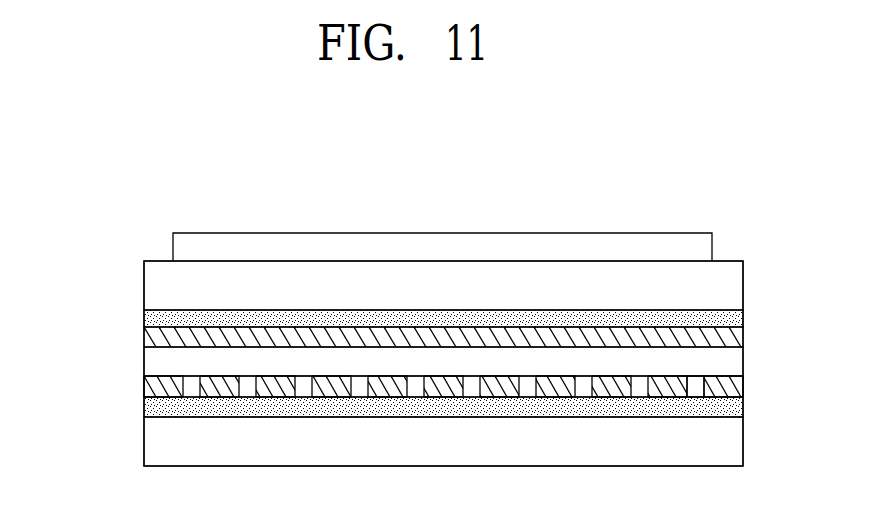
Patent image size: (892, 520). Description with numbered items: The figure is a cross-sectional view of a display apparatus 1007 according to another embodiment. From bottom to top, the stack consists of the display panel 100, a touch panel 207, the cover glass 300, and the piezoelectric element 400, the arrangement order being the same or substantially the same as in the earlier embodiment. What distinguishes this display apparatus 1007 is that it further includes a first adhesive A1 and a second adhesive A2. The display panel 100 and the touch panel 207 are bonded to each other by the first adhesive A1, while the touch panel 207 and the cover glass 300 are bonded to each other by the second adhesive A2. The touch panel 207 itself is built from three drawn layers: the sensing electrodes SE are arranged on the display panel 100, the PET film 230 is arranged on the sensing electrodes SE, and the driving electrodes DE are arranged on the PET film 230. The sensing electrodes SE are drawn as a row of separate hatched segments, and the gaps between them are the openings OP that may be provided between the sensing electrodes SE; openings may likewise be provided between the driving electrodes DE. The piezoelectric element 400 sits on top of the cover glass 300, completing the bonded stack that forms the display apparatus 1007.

The display apparatus 1007 is at (672, 178).
The piezoelectric element 400 is at (185, 247).
The cover glass 300 is at (155, 287).
The second adhesive A2 is at (743, 318).
The touch panel 207 is at (65, 328).
The driving electrodes DE is at (155, 333).
The PET film 230 is at (155, 362).
The sensing electrodes SE is at (155, 385).
The openings OP is at (693, 386).
The first adhesive A1 is at (738, 407).
The display panel 100 is at (155, 438).